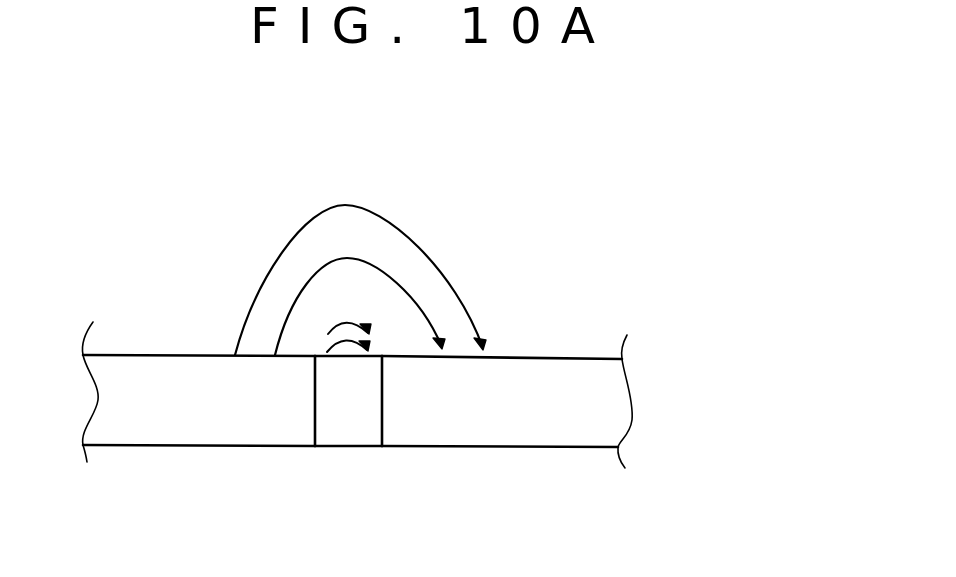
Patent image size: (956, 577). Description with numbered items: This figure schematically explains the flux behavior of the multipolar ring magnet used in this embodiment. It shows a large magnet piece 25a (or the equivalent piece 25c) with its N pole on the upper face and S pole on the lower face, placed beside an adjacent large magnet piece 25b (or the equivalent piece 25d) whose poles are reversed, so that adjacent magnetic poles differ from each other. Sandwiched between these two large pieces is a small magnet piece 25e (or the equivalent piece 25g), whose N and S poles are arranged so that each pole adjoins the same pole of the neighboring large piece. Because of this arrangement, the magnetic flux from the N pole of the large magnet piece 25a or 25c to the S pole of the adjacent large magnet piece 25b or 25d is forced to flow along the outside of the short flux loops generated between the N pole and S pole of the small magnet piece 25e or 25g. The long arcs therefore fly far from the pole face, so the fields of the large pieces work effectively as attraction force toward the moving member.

The large magnet piece 25a is at (200, 316).
The large magnet piece 25c is at (167, 355).
The large magnet piece 25b is at (583, 352).
The large magnet piece 25d is at (565, 358).
The small magnet piece 25e is at (460, 448).
The small magnet piece 25g is at (345, 438).